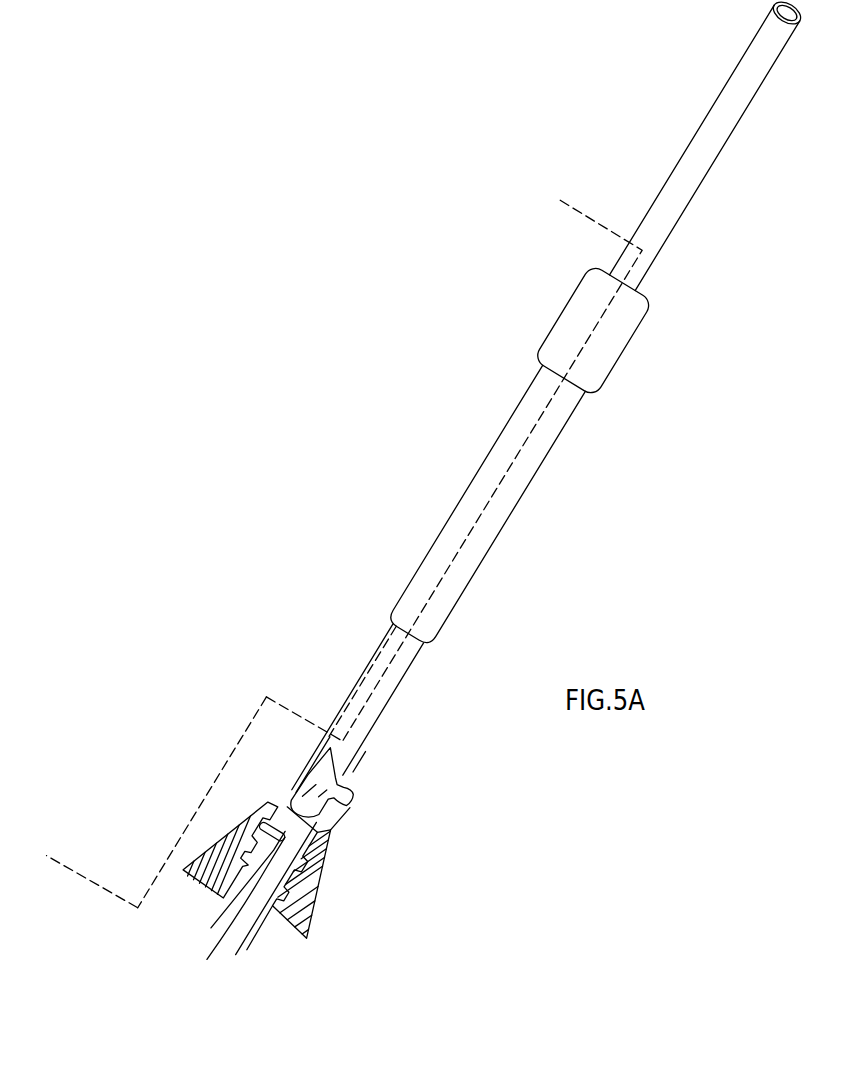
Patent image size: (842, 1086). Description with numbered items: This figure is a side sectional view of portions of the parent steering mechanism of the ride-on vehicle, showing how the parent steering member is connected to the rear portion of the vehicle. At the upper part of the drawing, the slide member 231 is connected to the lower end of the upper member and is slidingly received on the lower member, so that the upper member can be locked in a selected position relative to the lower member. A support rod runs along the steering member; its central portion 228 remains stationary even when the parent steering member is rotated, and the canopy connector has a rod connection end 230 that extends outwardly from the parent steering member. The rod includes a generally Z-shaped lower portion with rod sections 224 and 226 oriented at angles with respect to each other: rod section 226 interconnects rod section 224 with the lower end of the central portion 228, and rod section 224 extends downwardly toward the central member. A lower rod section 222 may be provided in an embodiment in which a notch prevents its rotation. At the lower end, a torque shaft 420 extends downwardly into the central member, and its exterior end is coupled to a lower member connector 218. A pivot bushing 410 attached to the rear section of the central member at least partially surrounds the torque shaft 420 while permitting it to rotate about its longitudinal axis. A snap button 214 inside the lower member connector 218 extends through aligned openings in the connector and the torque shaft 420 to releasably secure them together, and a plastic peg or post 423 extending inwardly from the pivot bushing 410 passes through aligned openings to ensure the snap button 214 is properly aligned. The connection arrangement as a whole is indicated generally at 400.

The snap button 214 is at (353, 800).
The lower member connector 218 is at (389, 702).
The lower rod section 222 is at (108, 893).
The rod section 224 is at (218, 777).
The rod section 226 is at (297, 710).
The central portion 228 is at (470, 528).
The rod connection end 230 is at (597, 224).
The slide member 231 is at (628, 352).
The tissue engagement assembly 400 is at (412, 888).
The pivot bushing 410 is at (320, 913).
The torque shaft 420 is at (255, 937).
The peg or post 423 is at (207, 962).